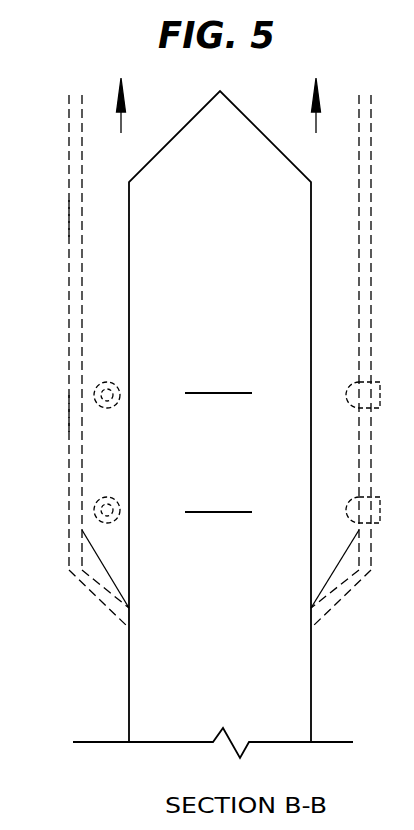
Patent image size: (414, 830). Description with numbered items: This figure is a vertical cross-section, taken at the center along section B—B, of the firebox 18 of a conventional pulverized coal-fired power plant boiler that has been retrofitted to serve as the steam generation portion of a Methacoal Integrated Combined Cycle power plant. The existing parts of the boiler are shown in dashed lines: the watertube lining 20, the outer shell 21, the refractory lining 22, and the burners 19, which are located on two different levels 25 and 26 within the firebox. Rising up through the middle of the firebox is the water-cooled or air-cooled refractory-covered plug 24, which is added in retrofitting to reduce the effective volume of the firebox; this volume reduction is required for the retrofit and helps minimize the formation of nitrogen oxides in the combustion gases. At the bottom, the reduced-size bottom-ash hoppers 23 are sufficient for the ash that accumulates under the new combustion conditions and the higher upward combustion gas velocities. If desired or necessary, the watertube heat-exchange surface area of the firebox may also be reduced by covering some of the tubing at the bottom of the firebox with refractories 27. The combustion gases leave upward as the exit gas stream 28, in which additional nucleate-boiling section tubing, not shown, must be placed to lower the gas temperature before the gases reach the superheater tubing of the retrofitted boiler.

The firebox 18 is at (66, 120).
The burners 19 is at (119, 402).
The watertube lining 20 is at (83, 174).
The outer shell 21 is at (66, 221).
The refractory lining 22 is at (69, 416).
The bottom-ash hoppers 23 is at (97, 607).
The refractory-covered plug 24 is at (216, 192).
The first burner level 25 is at (203, 393).
The second burner level 26 is at (203, 512).
The refractories 27 is at (98, 572).
The exit gas stream 28 is at (122, 128).